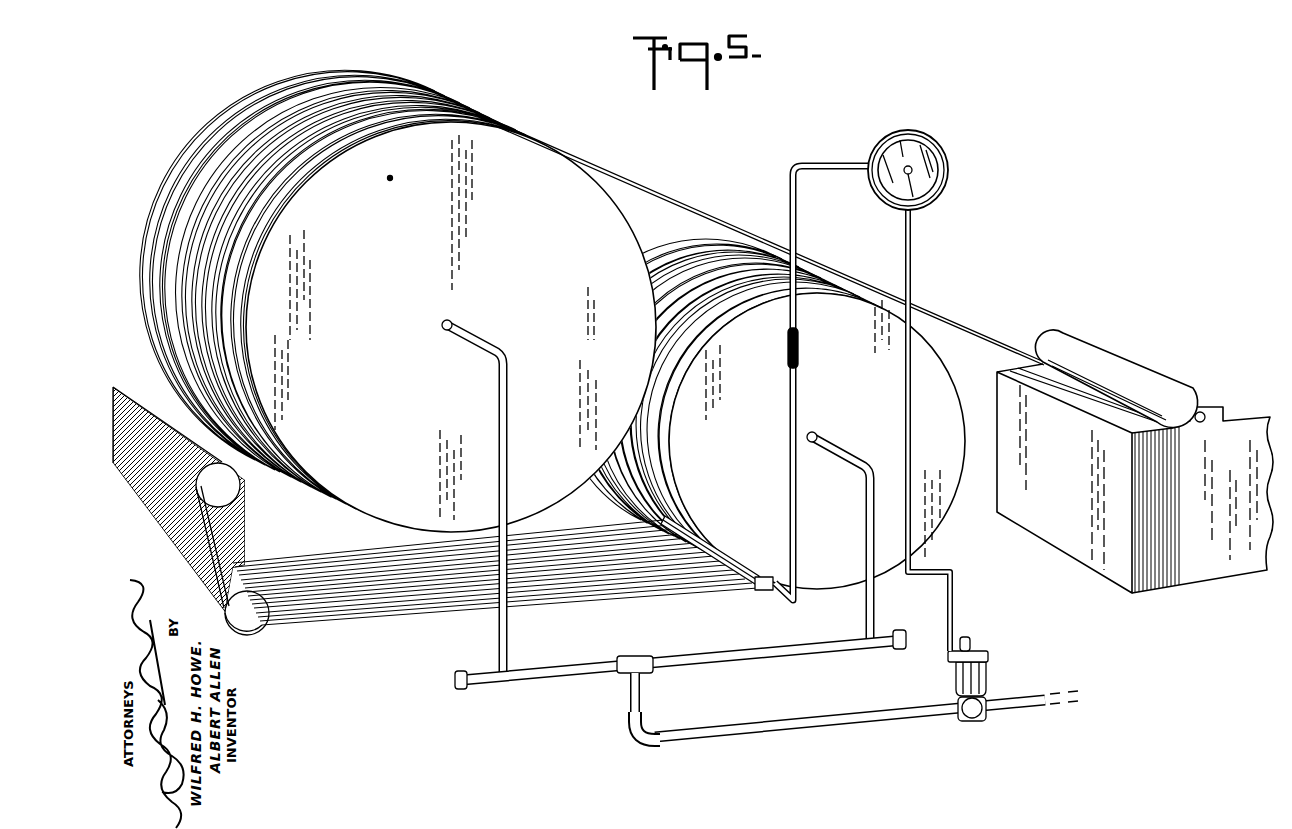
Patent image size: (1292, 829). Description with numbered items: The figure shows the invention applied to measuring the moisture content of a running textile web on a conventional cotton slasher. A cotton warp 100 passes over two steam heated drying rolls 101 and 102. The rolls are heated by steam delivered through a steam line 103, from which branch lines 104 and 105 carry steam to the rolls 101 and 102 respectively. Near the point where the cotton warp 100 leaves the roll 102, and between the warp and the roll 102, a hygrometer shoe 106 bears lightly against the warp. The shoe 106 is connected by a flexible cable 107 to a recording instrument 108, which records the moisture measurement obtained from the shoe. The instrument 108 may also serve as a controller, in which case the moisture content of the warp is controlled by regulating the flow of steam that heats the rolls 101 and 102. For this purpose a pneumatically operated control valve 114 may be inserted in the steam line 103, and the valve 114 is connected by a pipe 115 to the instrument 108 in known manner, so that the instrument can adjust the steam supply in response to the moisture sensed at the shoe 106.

The cotton warp 100 is at (914, 316).
The drying roll 101 is at (412, 445).
The drying roll 102 is at (900, 392).
The steam line 103 is at (806, 718).
The branch line 104 is at (510, 650).
The branch line 105 is at (875, 601).
The hygrometer shoe 106 is at (757, 586).
The flexible cable 107 is at (798, 237).
The recording instrument 108 is at (944, 152).
The control valve 114 is at (990, 656).
The pipe 115 is at (912, 253).